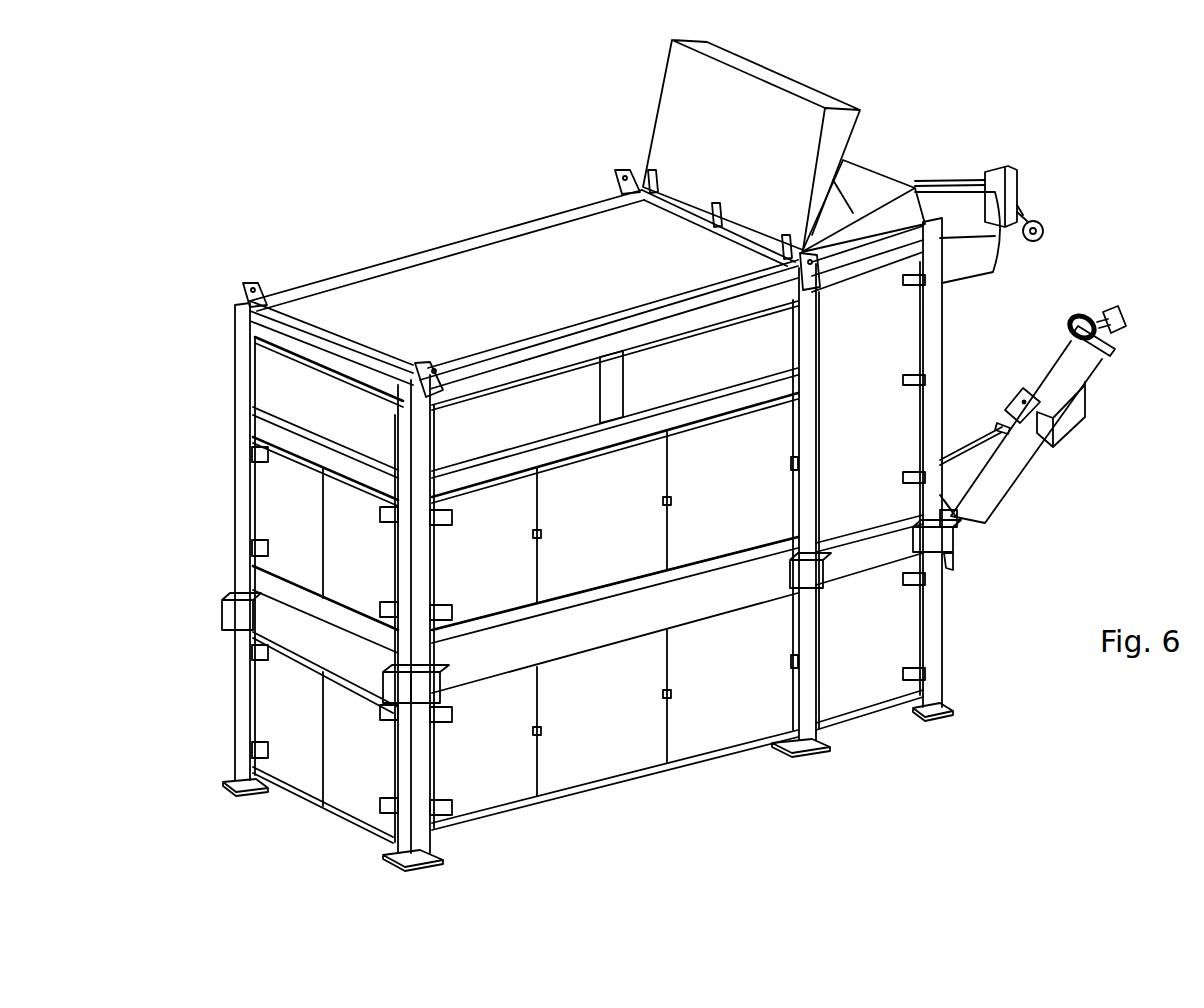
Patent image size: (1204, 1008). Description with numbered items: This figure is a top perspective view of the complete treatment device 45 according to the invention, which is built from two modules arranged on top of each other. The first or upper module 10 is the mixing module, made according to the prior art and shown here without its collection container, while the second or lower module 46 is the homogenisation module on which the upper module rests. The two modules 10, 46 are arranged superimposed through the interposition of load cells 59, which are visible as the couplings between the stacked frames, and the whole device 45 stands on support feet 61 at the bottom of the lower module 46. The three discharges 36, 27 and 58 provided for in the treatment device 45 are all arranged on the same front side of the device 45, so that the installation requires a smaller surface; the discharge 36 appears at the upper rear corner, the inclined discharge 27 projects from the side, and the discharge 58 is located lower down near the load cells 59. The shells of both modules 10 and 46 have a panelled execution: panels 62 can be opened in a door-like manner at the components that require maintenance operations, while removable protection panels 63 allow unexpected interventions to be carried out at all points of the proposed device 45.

The upper module 10 is at (222, 476).
The discharge 27 is at (1072, 415).
The discharge 36 is at (975, 262).
The device 45 is at (445, 178).
The lower module 46 is at (219, 742).
The discharge 58 is at (951, 560).
The load cells 59 is at (226, 606).
The support feet 61 is at (233, 790).
The panels 62 is at (340, 488).
The removable protection panels 63 is at (510, 554).